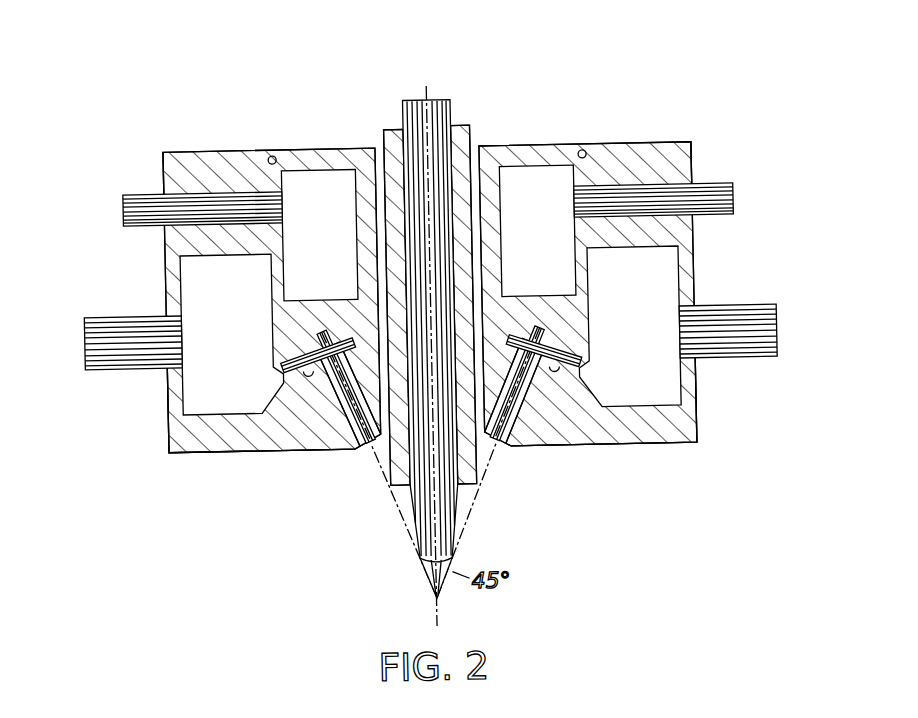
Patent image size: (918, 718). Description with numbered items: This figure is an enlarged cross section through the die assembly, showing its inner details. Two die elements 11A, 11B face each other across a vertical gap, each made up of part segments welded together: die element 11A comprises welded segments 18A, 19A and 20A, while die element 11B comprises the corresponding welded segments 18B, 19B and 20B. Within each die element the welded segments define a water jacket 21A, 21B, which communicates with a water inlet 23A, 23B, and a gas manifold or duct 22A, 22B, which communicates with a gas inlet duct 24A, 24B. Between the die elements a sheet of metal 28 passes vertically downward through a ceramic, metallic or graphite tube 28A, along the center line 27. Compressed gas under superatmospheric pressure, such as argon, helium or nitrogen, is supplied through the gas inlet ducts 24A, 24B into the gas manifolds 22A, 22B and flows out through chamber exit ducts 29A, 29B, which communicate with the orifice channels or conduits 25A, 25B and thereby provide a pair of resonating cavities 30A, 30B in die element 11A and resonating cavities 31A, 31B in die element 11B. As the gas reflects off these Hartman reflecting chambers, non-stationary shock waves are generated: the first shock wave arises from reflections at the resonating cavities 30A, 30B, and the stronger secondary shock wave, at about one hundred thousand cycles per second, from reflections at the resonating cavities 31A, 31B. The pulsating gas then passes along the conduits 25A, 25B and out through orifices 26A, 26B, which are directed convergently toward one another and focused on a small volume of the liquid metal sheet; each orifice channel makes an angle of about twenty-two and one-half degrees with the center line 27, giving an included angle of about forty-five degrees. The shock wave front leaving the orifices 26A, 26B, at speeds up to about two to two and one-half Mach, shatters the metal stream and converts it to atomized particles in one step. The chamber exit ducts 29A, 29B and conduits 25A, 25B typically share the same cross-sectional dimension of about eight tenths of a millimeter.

The die element 11A is at (253, 146).
The die element 11B is at (653, 152).
The welded segment 18A is at (277, 153).
The welded segment 18B is at (589, 154).
The welded segment 19A is at (166, 165).
The welded segment 19B is at (695, 168).
The welded segment 20A is at (162, 423).
The welded segment 20B is at (698, 432).
The water jacket 21A is at (316, 173).
The water jacket 21B is at (518, 172).
The gas manifold 22A is at (213, 409).
The gas manifold 22B is at (648, 409).
The water inlet 23A is at (150, 218).
The water inlet 23B is at (724, 224).
The gas inlet duct 24A is at (119, 364).
The gas inlet duct 24B is at (737, 366).
The conduit 25A is at (364, 439).
The conduit 25B is at (528, 422).
The orifice 26A is at (340, 431).
The orifice 26B is at (502, 448).
The center line 27 is at (436, 617).
The sheet of metal 28 is at (459, 104).
The tube 28A is at (396, 127).
The chamber exit duct 29A is at (308, 374).
The chamber exit duct 29B is at (553, 374).
The resonating cavity 30A is at (347, 328).
The resonating cavity 30B is at (519, 332).
The resonating cavity 31A is at (299, 349).
The resonating cavity 31B is at (554, 348).